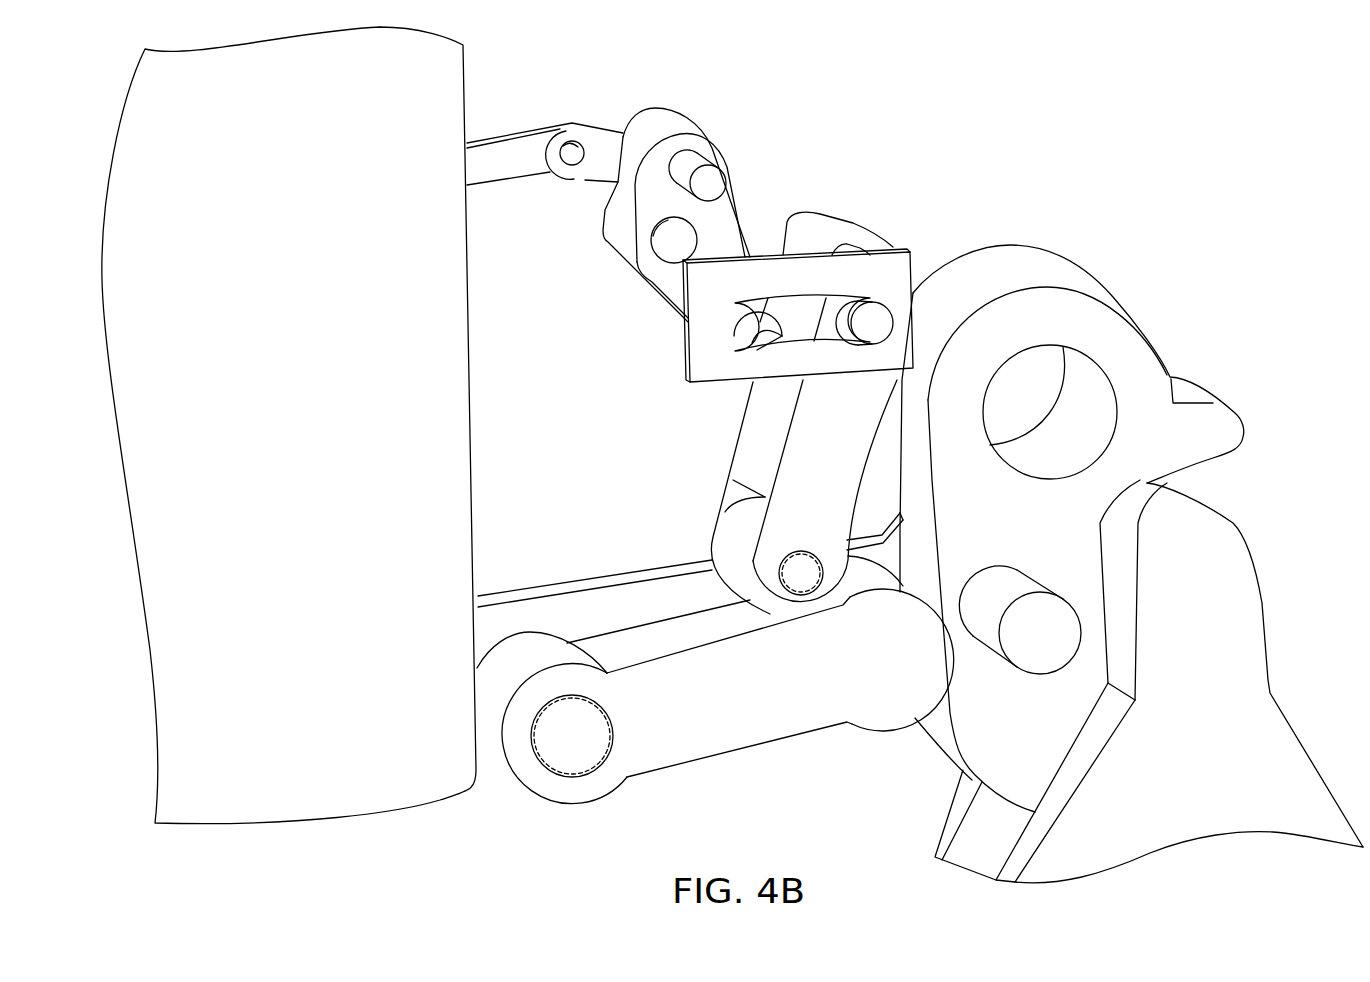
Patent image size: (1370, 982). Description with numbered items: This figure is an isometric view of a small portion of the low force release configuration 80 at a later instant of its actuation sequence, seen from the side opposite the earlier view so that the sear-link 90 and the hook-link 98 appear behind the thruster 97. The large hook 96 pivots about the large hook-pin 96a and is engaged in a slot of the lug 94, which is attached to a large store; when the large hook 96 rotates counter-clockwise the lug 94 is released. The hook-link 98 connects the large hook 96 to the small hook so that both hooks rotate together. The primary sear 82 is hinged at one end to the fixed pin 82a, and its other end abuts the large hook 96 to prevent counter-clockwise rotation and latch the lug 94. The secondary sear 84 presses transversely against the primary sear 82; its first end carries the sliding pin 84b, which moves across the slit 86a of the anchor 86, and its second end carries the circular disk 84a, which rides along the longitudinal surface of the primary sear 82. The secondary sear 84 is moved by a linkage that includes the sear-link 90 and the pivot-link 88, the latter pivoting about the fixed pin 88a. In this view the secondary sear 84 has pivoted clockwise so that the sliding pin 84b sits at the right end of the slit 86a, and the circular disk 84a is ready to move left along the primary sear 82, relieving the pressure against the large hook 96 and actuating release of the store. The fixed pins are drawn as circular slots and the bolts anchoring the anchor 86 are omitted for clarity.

The low force release configuration 80 is at (1112, 103).
The primary sear 82 is at (715, 708).
The fixed pin 82a is at (562, 742).
The secondary sear 84 is at (786, 432).
The circular disk 84a is at (733, 555).
The sliding pin 84b is at (868, 314).
The anchor 86 is at (795, 295).
The slit 86a is at (718, 330).
The pivot-link 88 is at (705, 197).
The fixed pin 88a is at (683, 240).
The sear-link 90 is at (515, 131).
The lug 94 is at (1287, 765).
The large hook 96 is at (1087, 563).
The large hook-pin 96a is at (1045, 395).
The thruster 97 is at (124, 297).
The hook-link 98 is at (482, 615).